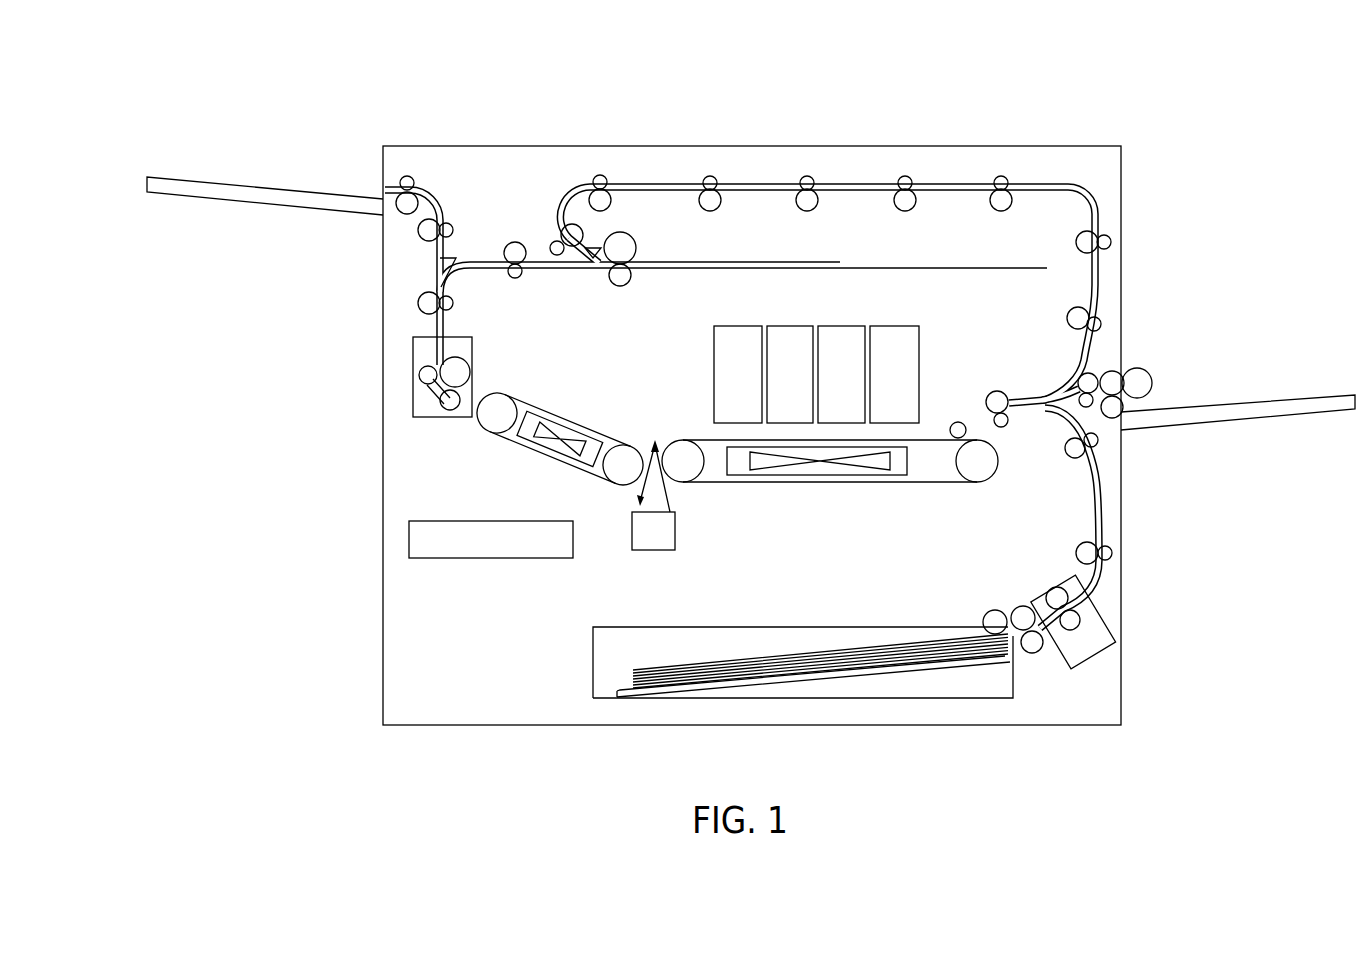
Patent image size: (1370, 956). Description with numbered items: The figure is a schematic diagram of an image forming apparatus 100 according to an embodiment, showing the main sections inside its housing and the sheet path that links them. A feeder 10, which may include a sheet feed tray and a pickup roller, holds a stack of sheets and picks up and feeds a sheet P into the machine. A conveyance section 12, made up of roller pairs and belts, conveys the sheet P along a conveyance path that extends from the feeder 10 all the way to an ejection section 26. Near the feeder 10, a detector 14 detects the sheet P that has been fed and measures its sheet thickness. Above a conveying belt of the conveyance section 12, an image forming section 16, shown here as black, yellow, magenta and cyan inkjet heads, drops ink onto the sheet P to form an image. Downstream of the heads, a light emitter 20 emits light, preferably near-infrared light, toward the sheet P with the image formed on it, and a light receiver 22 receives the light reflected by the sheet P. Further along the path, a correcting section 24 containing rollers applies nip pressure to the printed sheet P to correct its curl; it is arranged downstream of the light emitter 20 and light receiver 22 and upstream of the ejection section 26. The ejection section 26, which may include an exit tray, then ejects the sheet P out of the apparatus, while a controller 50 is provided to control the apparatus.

The image forming apparatus 100 is at (1000, 103).
The feeder 10 is at (972, 700).
The conveyance section 12 is at (437, 322).
The detector 14 is at (1108, 607).
The image forming section 16 is at (920, 338).
The light emitter 20 is at (703, 495).
The light receiver 22 is at (677, 526).
The correcting section 24 is at (412, 398).
The ejection section 26 is at (279, 188).
The controller 50 is at (409, 538).
The sheet P is at (797, 650).